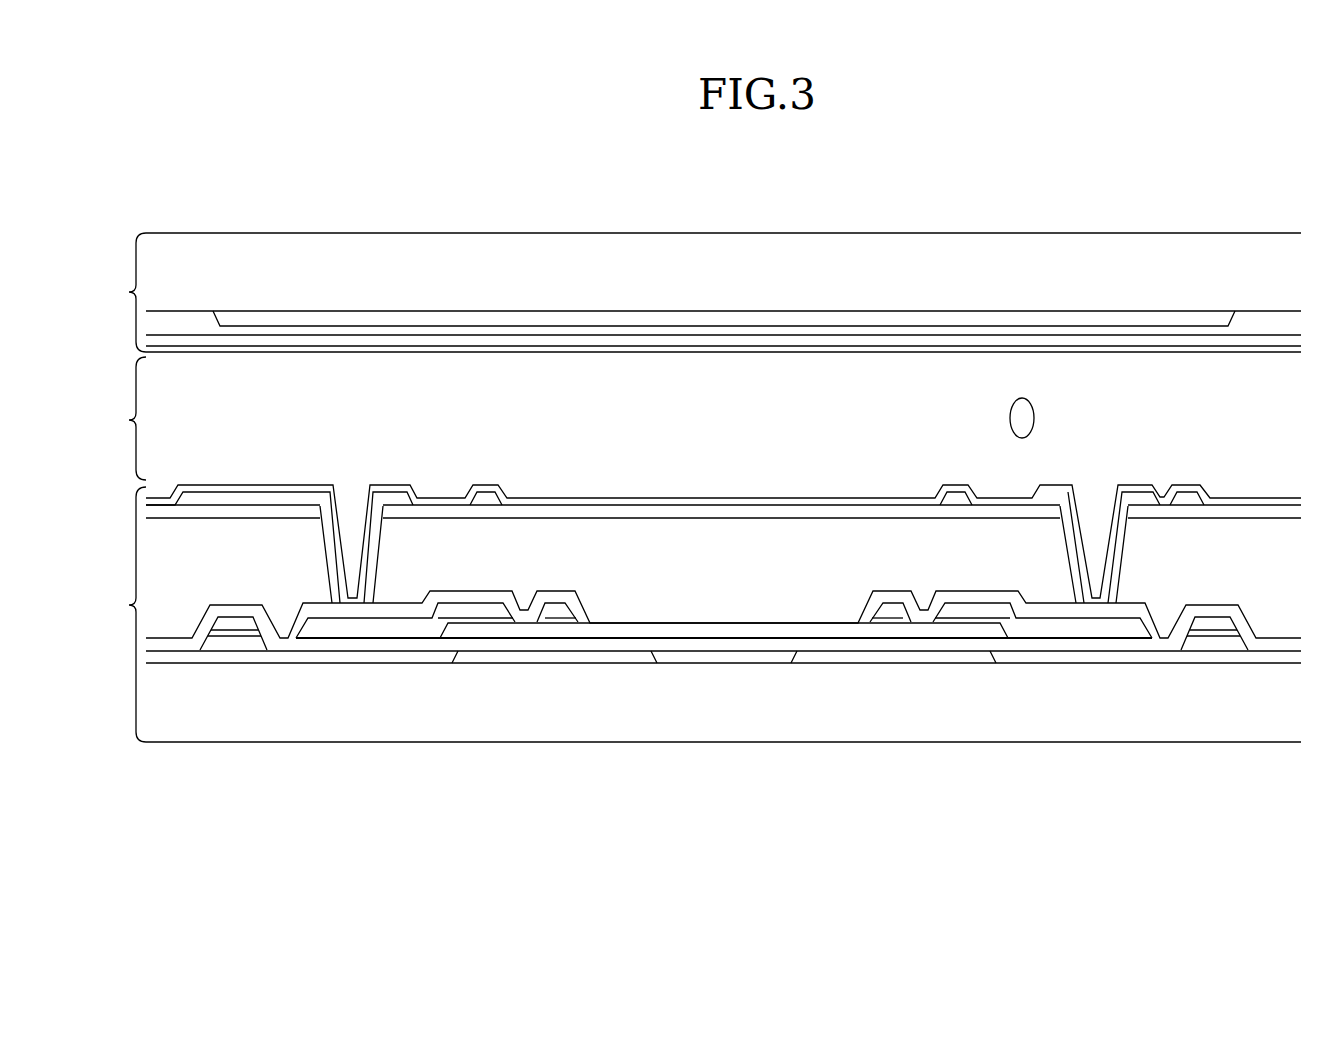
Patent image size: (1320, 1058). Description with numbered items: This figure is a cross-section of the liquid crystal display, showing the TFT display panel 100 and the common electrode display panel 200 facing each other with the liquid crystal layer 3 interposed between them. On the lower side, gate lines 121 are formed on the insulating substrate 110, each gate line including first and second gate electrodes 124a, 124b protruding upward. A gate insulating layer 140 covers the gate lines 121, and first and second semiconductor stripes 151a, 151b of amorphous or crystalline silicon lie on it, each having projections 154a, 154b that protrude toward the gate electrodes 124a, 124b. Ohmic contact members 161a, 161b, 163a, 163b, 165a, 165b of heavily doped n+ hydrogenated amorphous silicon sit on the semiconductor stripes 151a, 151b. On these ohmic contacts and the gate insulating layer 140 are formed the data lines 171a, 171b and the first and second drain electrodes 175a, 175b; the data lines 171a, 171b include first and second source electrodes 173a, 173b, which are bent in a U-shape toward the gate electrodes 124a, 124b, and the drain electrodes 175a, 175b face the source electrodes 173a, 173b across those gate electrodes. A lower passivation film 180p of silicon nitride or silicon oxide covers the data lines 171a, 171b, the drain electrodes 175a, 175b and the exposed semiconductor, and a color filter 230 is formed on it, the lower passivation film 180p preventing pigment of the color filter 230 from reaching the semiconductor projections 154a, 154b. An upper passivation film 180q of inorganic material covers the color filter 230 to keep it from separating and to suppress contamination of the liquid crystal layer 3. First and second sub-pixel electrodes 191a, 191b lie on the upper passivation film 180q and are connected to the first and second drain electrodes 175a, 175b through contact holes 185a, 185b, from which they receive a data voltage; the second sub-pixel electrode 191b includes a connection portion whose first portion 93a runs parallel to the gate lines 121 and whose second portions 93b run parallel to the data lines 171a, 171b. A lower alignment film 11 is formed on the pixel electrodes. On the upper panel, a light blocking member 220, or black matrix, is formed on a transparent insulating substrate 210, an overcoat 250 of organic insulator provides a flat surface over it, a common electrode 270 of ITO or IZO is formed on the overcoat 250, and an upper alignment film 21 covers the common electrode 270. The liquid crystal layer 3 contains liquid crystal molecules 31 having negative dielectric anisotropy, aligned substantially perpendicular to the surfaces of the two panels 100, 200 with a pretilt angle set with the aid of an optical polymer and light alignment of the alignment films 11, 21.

The liquid crystal layer 3 is at (126, 418).
The lower alignment film 11 is at (792, 498).
The upper alignment film 21 is at (852, 350).
The liquid crystal molecules 31 is at (1036, 410).
The first portion 93a is at (486, 500).
The second portions 93b is at (222, 498).
The TFT display panel 100 is at (118, 614).
The insulating substrate 110 is at (343, 720).
The gate lines 121 is at (703, 658).
The first gate electrode 124a is at (922, 658).
The second gate electrode 124b is at (527, 657).
The gate insulating layer 140 is at (643, 643).
The first semiconductor stripe 151a is at (1196, 650).
The second semiconductor stripe 151b is at (221, 650).
The projection 154a is at (1087, 645).
The projection 154b is at (376, 645).
The ohmic contact member 161a is at (1210, 640).
The ohmic contact member 161b is at (236, 637).
The ohmic contact member 163a is at (883, 620).
The ohmic contact member 163b is at (565, 620).
The ohmic contact member 165a is at (972, 620).
The ohmic contact member 165b is at (476, 620).
The data line 171a is at (1226, 627).
The data line 171b is at (250, 624).
The first source electrode 173a is at (888, 610).
The second source electrode 173b is at (558, 612).
The first drain electrode 175a is at (993, 612).
The second drain electrode 175b is at (452, 612).
The lower passivation film 180p is at (768, 628).
The upper passivation film 180q is at (648, 512).
The contact hole 185a is at (1127, 531).
The contact hole 185b is at (320, 535).
The first sub-pixel electrode 191a is at (1147, 500).
The second sub-pixel electrode 191b is at (393, 500).
The common electrode display panel 200 is at (116, 292).
The insulating substrate 210 is at (680, 250).
The light blocking member 220 is at (797, 320).
The color filter 230 is at (160, 545).
The overcoat 250 is at (908, 330).
The common electrode 270 is at (1006, 340).